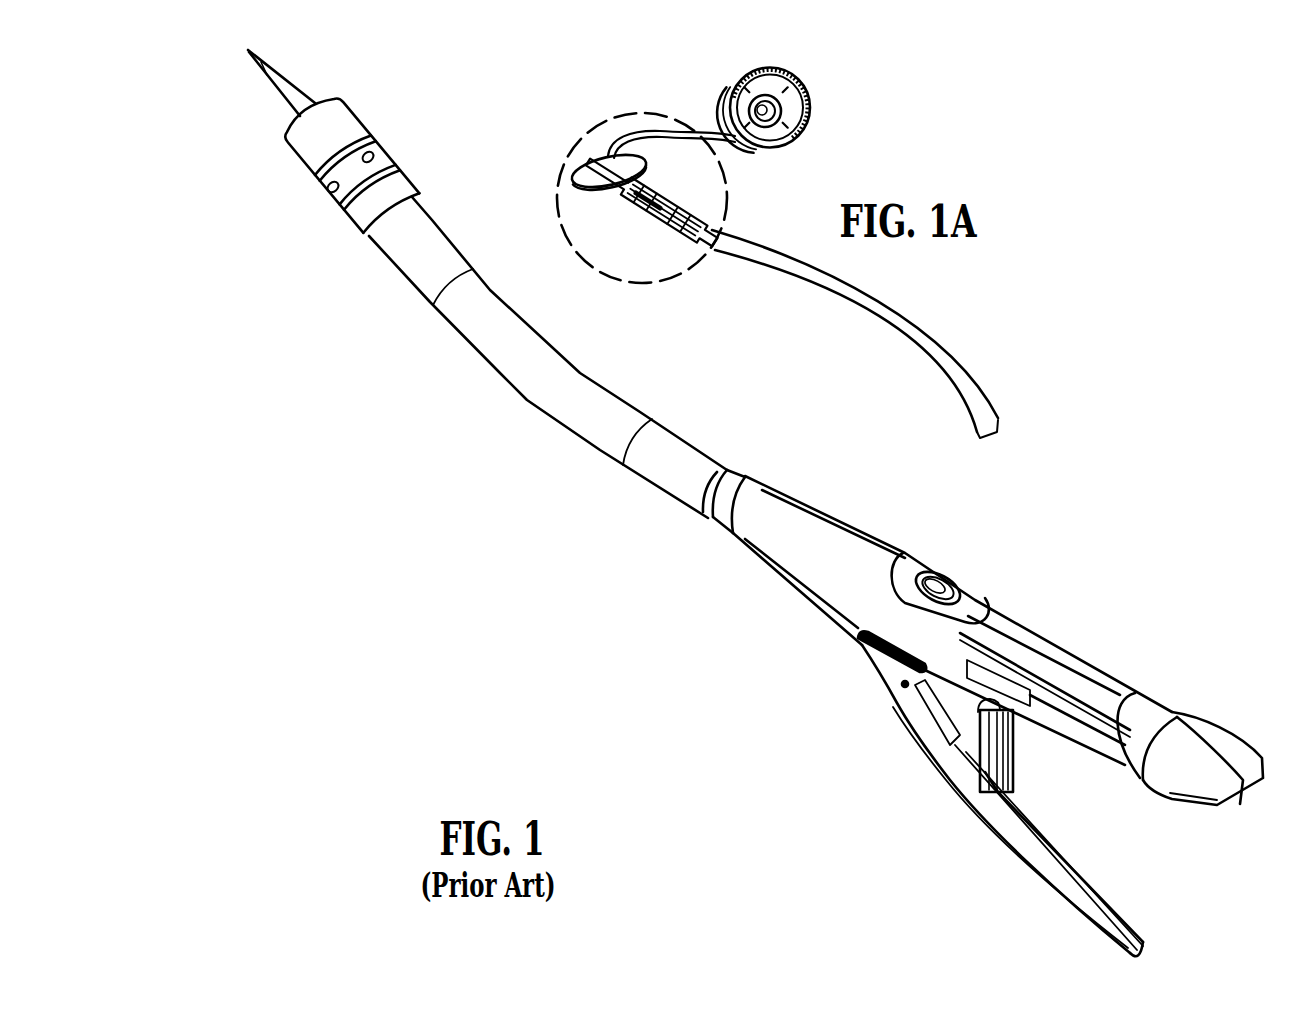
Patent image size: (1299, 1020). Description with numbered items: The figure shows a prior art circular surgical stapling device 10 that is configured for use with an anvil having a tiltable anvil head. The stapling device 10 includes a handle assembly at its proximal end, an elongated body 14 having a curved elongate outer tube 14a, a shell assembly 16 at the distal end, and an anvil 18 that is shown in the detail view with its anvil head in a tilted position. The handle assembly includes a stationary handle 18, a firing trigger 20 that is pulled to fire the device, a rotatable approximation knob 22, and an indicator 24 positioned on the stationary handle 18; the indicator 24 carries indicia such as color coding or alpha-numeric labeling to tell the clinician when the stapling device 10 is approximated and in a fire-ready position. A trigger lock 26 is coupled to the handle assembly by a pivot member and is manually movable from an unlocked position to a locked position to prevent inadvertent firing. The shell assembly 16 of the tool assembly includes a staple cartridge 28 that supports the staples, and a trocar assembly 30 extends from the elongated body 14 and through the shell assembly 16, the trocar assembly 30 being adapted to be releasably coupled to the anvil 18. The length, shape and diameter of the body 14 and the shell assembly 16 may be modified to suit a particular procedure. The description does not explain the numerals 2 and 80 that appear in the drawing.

In FIG. 1A, the detail region 2 is at (577, 138).
In FIG. 1, the surgical stapling device 10 is at (1008, 478).
In FIG. 1, the elongated body 14 is at (627, 404).
In FIG. 1, the curved elongate outer tube 14a is at (602, 450).
In FIG. 1, the shell assembly 16 is at (298, 164).
In FIG. 1, the anvil 18 is at (1042, 643).
In FIG. 1A, the anvil 18 is at (569, 167).
In FIG. 1, the firing trigger 20 is at (1042, 882).
In FIG. 1, the rotatable approximation knob 22 is at (1227, 750).
In FIG. 1, the indicator 24 is at (933, 580).
In FIG. 1, the trigger lock 26 is at (1003, 760).
In FIG. 1, the staple cartridge 28 is at (323, 97).
In FIG. 1, the trocar assembly 30 is at (281, 64).
In FIG. 1A, the rotation knob 80 is at (808, 93).